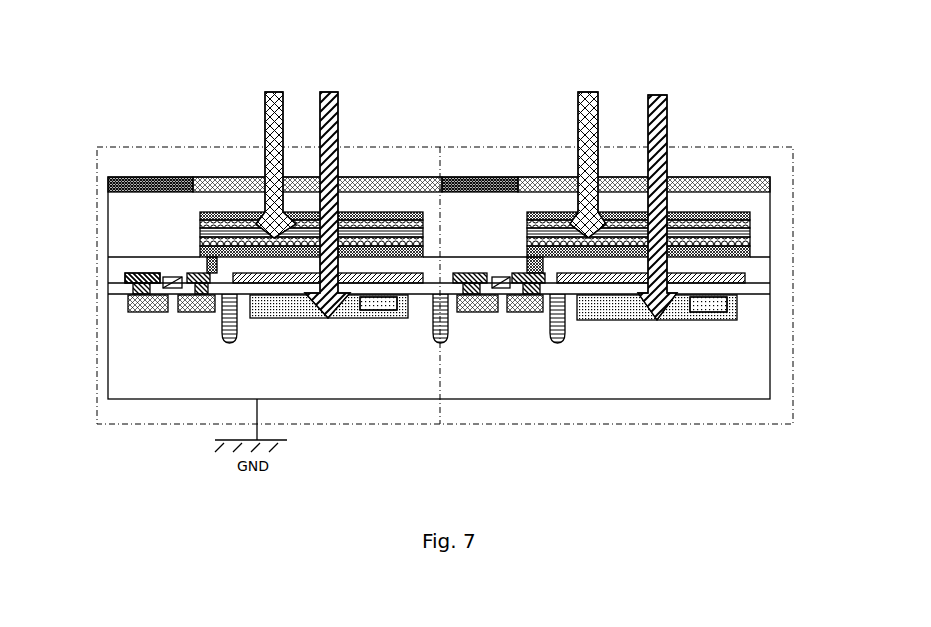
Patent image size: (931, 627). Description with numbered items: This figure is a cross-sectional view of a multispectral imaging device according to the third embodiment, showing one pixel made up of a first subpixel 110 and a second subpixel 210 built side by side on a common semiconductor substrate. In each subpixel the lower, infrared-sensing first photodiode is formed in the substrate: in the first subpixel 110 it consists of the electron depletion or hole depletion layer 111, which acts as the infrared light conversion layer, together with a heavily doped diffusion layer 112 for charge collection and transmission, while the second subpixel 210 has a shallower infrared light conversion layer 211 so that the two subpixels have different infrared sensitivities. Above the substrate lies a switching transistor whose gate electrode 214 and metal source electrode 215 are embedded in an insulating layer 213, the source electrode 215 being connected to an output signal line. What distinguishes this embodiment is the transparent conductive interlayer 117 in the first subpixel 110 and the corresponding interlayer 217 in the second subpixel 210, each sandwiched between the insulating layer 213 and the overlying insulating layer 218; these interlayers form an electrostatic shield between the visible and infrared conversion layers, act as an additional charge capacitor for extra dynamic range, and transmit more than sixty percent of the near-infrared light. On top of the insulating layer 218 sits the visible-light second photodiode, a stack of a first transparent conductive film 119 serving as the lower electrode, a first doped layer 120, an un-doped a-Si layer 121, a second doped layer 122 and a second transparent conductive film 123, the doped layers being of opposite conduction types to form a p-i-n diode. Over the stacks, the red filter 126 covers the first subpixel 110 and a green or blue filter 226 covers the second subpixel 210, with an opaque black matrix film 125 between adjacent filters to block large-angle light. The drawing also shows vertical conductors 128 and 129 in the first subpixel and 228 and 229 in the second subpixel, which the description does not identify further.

The first subpixel 110 is at (553, 425).
The second subpixel 210 is at (302, 425).
The infrared light conversion layer 211 is at (356, 315).
The electron depletion or hole depletion layer 111 is at (695, 323).
The heavily doped diffusion layer 112 is at (738, 313).
The transparent conductive film interlayer 117 is at (620, 277).
The transparent conductive film interlayer 217 is at (390, 273).
The first transparent conductive film 119 is at (750, 255).
The first doped layer 120 is at (750, 243).
The un-doped a-Si layer 121 is at (750, 233).
The second doped layer 122 is at (750, 224).
The second transparent conductive film 123 is at (750, 213).
The opaque film 125 is at (483, 177).
The filter 126 is at (710, 177).
The filter 226 is at (247, 177).
The first terminal 128 is at (598, 97).
The second terminal 129 is at (667, 108).
The first terminal 228 is at (283, 94).
The second terminal 229 is at (338, 97).
The insulating layer 213 is at (120, 283).
The gate electrode 214 is at (177, 278).
The source electrode 215 is at (147, 278).
The insulating layer 218 is at (118, 263).